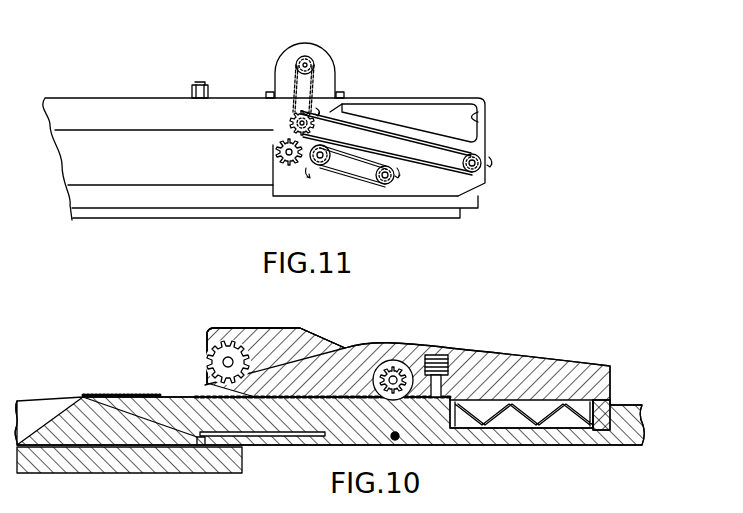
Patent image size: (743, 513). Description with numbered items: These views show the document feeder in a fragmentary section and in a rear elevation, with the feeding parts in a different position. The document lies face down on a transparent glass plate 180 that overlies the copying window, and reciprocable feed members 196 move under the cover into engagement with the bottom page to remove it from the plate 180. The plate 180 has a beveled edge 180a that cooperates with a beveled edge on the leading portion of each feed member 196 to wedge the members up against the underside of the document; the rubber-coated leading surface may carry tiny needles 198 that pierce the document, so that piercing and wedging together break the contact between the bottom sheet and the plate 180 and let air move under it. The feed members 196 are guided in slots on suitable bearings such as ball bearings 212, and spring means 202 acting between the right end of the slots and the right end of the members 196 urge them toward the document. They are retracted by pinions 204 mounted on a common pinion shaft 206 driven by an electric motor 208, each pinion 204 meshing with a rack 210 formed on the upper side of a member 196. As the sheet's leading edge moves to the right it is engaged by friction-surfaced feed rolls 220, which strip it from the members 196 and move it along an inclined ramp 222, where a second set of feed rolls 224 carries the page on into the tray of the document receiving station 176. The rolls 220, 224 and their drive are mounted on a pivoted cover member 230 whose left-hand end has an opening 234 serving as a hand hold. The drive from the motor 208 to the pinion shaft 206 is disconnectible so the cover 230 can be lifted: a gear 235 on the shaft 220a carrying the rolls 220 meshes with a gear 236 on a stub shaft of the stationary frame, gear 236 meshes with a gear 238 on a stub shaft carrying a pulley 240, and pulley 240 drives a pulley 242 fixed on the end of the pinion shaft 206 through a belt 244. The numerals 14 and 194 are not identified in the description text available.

In FIG. 10, the base 14 is at (131, 465).
In FIG. 11, the document receiving station 176 is at (172, 80).
In FIG. 10, the transparent glass plate 180 is at (18, 418).
In FIG. 10, the beveled edge 180a is at (194, 444).
In FIG. 11, the switch 194 is at (204, 84).
In FIG. 10, the feed members 196 is at (300, 415).
In FIG. 10, the needles 198 is at (93, 396).
In FIG. 10, the spring means 202 is at (568, 428).
In FIG. 10, the pinions 204 is at (433, 358).
In FIG. 11, the pinion shaft 206 is at (385, 186).
In FIG. 10, the pinion shaft 206 is at (397, 366).
In FIG. 11, the electric motor 208 is at (323, 62).
In FIG. 10, the rack 210 is at (350, 358).
In FIG. 10, the ball bearings 212 is at (398, 441).
In FIG. 11, the feed rolls 220 is at (484, 170).
In FIG. 10, the feed rolls 220 is at (213, 370).
In FIG. 11, the shaft 220a is at (337, 103).
In FIG. 10, the inclined ramp 222 is at (297, 347).
In FIG. 11, the second set of feed rolls 224 is at (287, 127).
In FIG. 11, the cover member 230 is at (135, 82).
In FIG. 10, the cover member 230 is at (226, 331).
In FIG. 11, the opening 234 is at (480, 116).
In FIG. 11, the gear 235 is at (291, 133).
In FIG. 11, the gear 236 is at (278, 153).
In FIG. 11, the gear 238 is at (347, 138).
In FIG. 11, the pulley 240 is at (320, 182).
In FIG. 11, the pulley 242 is at (394, 179).
In FIG. 11, the belt 244 is at (358, 180).